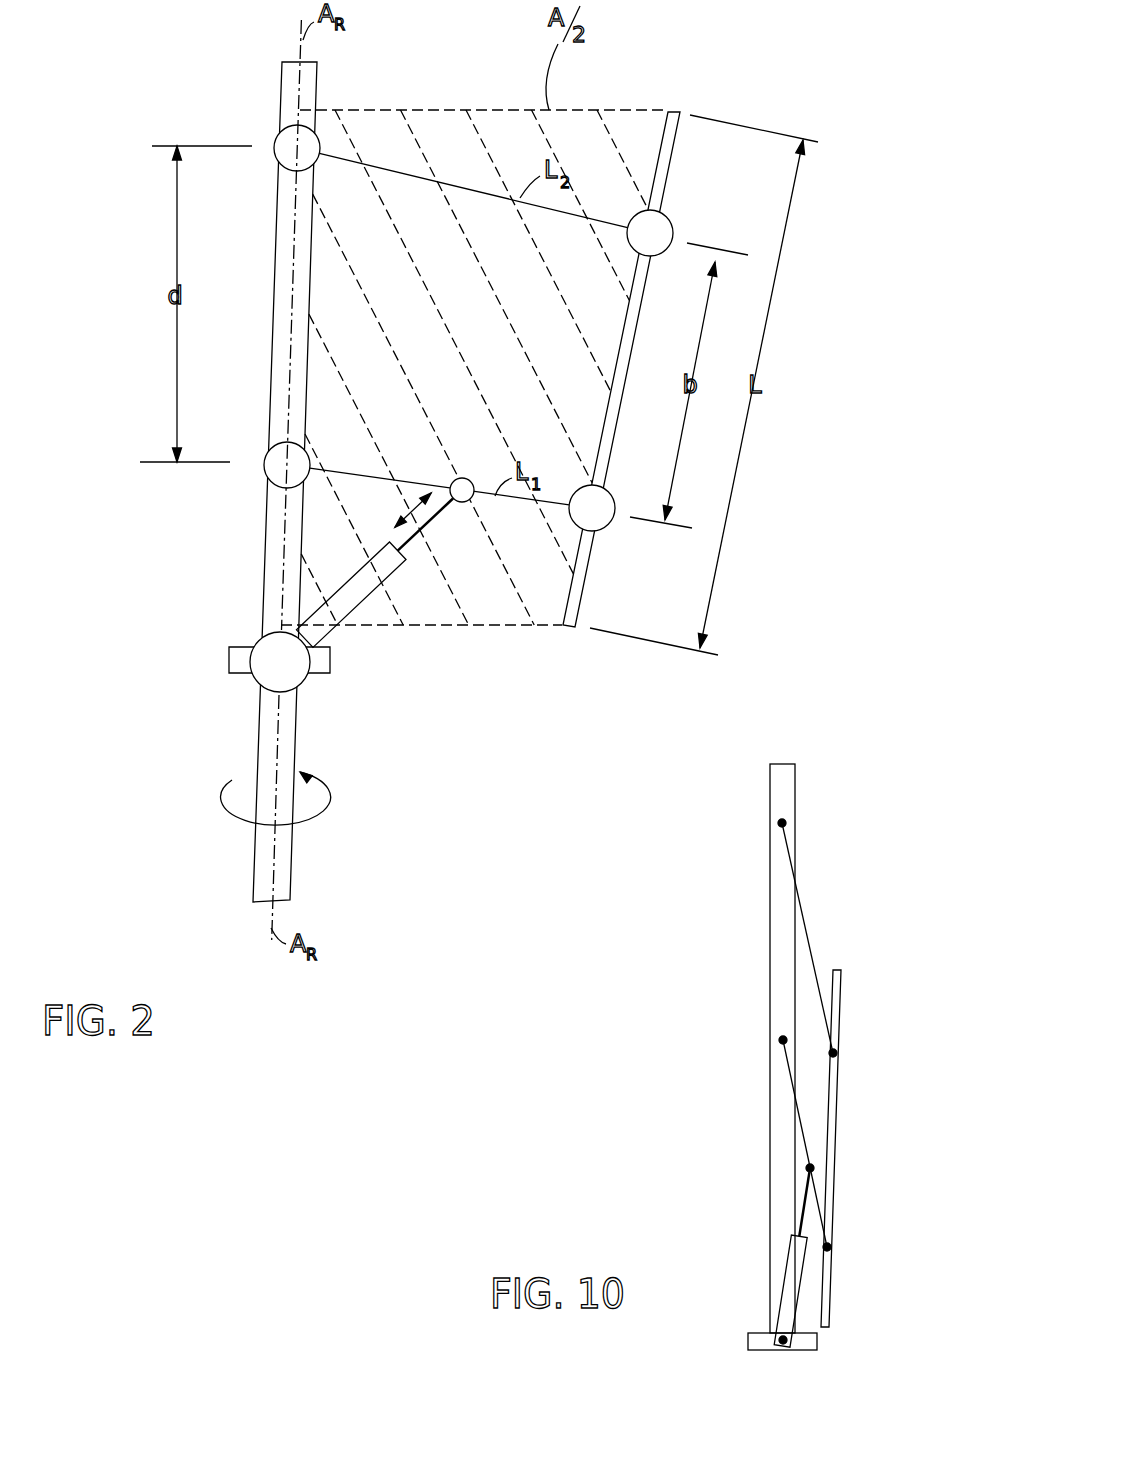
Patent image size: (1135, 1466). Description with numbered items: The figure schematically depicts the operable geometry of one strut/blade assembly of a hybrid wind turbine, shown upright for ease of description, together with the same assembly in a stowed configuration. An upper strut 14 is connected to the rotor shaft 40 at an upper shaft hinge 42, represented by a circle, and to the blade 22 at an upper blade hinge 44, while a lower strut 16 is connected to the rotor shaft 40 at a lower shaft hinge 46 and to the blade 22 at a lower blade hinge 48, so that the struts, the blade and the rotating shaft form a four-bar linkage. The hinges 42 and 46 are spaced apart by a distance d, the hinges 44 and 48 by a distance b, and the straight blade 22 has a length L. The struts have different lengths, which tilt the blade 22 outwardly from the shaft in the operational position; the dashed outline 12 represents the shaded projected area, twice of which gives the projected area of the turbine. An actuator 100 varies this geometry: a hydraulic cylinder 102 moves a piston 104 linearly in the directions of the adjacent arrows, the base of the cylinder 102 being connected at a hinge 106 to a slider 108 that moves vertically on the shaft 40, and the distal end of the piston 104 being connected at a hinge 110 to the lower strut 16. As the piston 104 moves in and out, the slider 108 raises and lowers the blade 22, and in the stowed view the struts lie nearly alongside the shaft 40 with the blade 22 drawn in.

In FIG. 2, the panel envelope 12 is at (385, 110).
In FIG. 2, the upper strut 14 is at (445, 188).
In FIG. 10, the upper strut 14 is at (810, 938).
In FIG. 2, the lower strut 16 is at (388, 480).
In FIG. 10, the lower strut 16 is at (785, 1070).
In FIG. 2, the blade 22 is at (674, 155).
In FIG. 10, the blade 22 is at (840, 1003).
In FIG. 2, the rotor shaft 40 is at (300, 358).
In FIG. 10, the rotor shaft 40 is at (783, 764).
In FIG. 2, the upper shaft hinge 42 is at (283, 138).
In FIG. 10, the upper shaft hinge 42 is at (780, 823).
In FIG. 2, the upper blade hinge 44 is at (671, 232).
In FIG. 10, the upper blade hinge 44 is at (836, 1055).
In FIG. 2, the lower shaft hinge 46 is at (280, 470).
In FIG. 10, the lower shaft hinge 46 is at (780, 1040).
In FIG. 2, the lower blade hinge 48 is at (602, 517).
In FIG. 10, the lower blade hinge 48 is at (830, 1247).
In FIG. 2, the actuator 100 is at (351, 614).
In FIG. 2, the hydraulic cylinder 102 is at (347, 590).
In FIG. 10, the hydraulic cylinder 102 is at (787, 1282).
In FIG. 2, the piston 104 is at (437, 517).
In FIG. 10, the piston 104 is at (800, 1202).
In FIG. 2, the hinge 106 is at (268, 648).
In FIG. 2, the slider 108 is at (318, 662).
In FIG. 10, the slider 108 is at (810, 1342).
In FIG. 2, the hinge 110 is at (465, 478).
In FIG. 10, the hinge 110 is at (812, 1168).